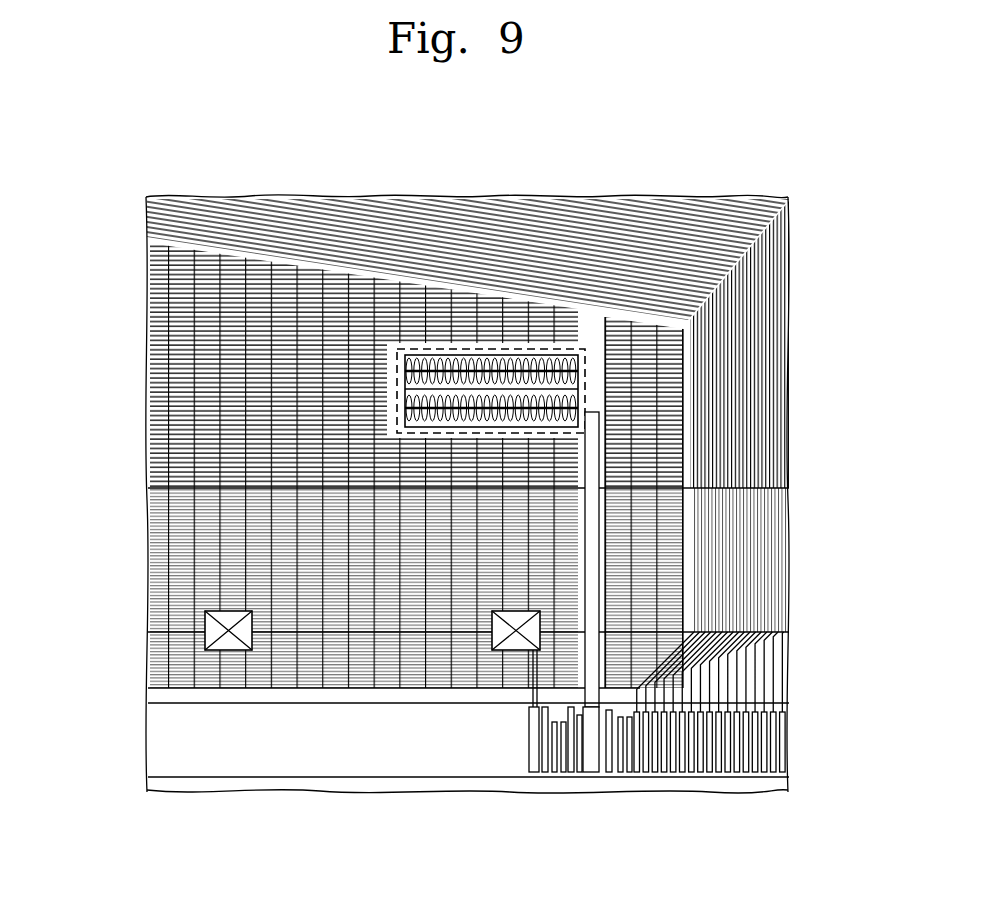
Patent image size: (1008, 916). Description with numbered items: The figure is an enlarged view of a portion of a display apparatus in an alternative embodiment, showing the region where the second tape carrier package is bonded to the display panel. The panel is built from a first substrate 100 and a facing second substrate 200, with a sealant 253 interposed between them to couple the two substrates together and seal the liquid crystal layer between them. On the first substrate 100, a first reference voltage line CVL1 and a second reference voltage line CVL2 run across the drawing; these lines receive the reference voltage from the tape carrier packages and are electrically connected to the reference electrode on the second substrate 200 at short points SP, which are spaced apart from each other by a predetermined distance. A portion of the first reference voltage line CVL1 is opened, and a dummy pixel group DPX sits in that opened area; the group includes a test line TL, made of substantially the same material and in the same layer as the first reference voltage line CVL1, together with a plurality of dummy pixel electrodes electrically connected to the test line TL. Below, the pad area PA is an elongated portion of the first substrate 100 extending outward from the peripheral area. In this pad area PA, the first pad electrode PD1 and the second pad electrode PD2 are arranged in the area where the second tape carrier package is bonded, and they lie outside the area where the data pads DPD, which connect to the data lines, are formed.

The dummy pixel group DPX is at (516, 343).
The first reference voltage line CVL1 is at (150, 415).
The second reference voltage line CVL2 is at (680, 398).
The test line TL is at (595, 452).
The sealant 253 is at (772, 495).
The short points SP is at (233, 652).
The second substrate 200 is at (165, 704).
The pad area PA is at (163, 733).
The first substrate 100 is at (170, 776).
The second pad electrode PD2 is at (531, 777).
The first pad electrode PD1 is at (591, 777).
The data pads DPD is at (790, 797).